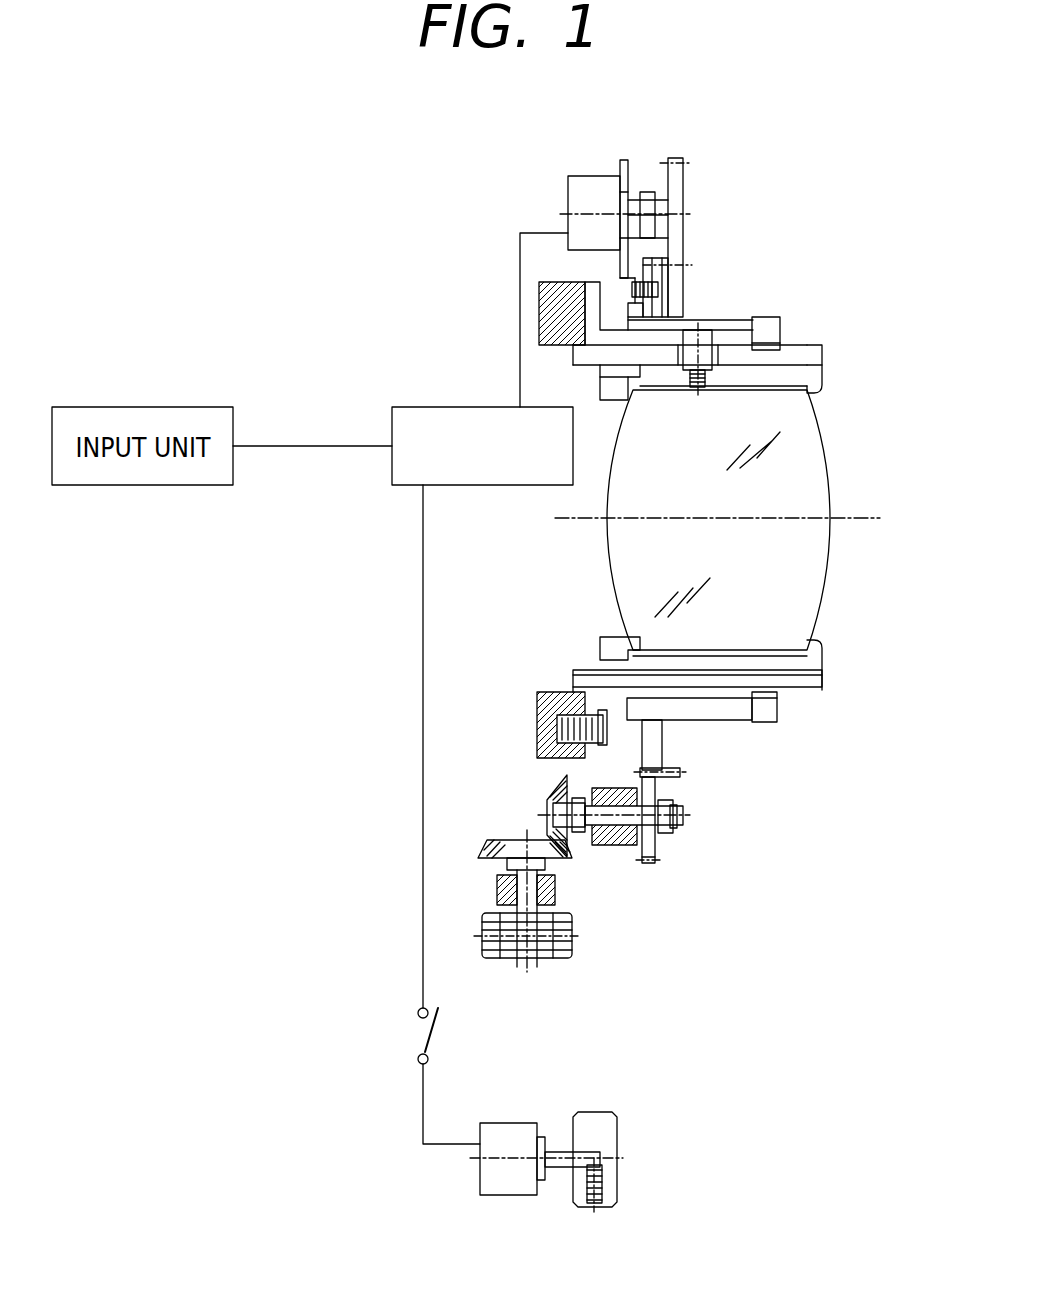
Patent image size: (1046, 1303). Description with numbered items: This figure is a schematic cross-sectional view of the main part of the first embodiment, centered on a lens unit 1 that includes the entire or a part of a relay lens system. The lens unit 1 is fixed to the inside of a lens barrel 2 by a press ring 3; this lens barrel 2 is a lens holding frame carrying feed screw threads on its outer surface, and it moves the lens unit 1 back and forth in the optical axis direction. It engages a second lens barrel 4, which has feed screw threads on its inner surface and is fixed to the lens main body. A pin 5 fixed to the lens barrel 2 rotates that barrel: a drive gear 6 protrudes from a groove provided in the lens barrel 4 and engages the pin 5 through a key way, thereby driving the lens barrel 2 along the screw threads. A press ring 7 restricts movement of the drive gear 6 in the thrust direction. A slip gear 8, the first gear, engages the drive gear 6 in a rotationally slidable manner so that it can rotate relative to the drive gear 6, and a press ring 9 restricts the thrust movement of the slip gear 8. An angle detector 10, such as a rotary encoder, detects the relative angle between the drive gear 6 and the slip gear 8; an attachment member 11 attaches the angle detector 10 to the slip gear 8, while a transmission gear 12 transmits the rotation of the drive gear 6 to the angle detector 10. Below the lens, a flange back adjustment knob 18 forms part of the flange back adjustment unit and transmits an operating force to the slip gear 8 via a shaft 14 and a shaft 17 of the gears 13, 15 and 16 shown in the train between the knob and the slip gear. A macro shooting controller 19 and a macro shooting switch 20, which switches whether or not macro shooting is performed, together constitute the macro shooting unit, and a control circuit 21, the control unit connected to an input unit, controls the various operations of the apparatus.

The lens unit 1 is at (813, 467).
The lens barrel 2 is at (807, 375).
The press ring 3 is at (607, 393).
The lens barrel 4 is at (765, 343).
The pin 5 is at (705, 337).
The drive gear 6 is at (672, 315).
The press ring 7 is at (768, 345).
The slip gear 8 is at (653, 272).
The press ring 9 is at (632, 310).
The angle detector 10 is at (588, 235).
The attachment member 11 is at (623, 243).
The gear 12 is at (673, 180).
The gear 13 is at (653, 843).
The shaft 14 is at (608, 813).
The gear 15 is at (550, 787).
The gear 16 is at (550, 857).
The shaft 17 is at (518, 895).
The flange back adjustment knob 18 is at (549, 953).
The macro shooting controller 19 is at (510, 1183).
The macro shooting switch 20 is at (418, 1032).
The control circuit 21 is at (423, 407).